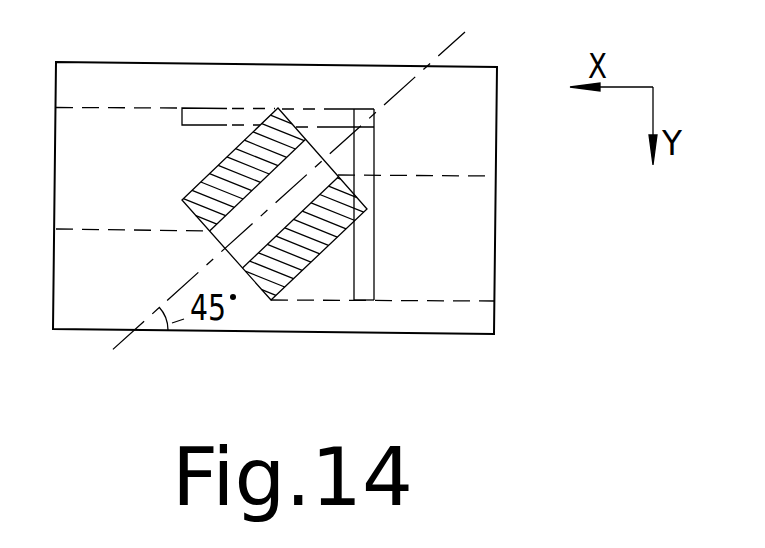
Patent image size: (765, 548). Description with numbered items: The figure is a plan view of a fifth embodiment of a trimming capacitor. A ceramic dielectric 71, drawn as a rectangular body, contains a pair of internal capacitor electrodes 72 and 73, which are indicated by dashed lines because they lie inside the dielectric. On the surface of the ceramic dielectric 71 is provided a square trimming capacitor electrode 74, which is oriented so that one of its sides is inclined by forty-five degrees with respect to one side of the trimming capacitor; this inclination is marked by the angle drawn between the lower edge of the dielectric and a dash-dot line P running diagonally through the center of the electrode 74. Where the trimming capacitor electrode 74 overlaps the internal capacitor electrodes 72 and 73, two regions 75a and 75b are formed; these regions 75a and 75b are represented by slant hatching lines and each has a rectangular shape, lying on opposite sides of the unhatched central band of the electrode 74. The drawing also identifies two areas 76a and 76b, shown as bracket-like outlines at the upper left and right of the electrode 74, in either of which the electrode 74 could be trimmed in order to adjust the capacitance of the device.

The ceramic dielectric 71 is at (467, 82).
The internal capacitor electrode 72 is at (133, 128).
The internal capacitor electrode 73 is at (425, 285).
The trimming capacitor electrode 74 is at (322, 158).
The overlap region 75a is at (207, 177).
The overlap region 75b is at (301, 272).
The trimming area 76a is at (212, 107).
The trimming area 76b is at (374, 270).
The center line P is at (438, 55).